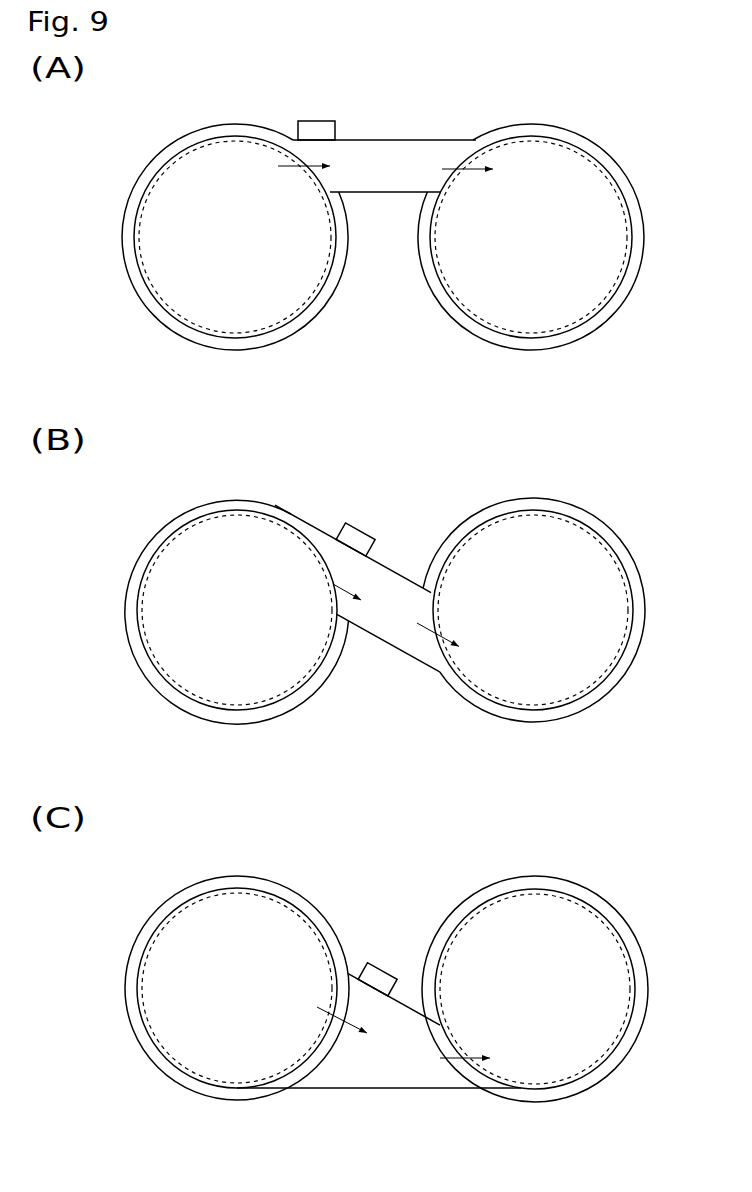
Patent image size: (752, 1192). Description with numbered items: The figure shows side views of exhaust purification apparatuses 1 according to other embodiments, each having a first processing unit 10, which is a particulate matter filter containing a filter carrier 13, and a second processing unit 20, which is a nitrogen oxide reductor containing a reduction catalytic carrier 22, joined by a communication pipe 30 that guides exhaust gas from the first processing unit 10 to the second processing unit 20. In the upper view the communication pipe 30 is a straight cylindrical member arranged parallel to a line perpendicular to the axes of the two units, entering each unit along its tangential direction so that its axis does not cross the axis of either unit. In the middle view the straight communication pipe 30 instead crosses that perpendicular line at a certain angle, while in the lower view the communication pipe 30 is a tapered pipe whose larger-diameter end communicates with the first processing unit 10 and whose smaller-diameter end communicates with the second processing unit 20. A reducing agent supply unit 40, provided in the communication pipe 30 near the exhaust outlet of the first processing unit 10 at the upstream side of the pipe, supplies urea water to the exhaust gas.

The exhaust purification apparatus 1 is at (385, 585).
The first processing unit 10 is at (122, 318).
The filter carrier 13 is at (120, 236).
The second processing unit 20 is at (645, 318).
The reduction catalytic carrier 22 is at (650, 237).
The communication pipe 30 is at (379, 138).
The reducing agent supply unit 40 is at (318, 120).